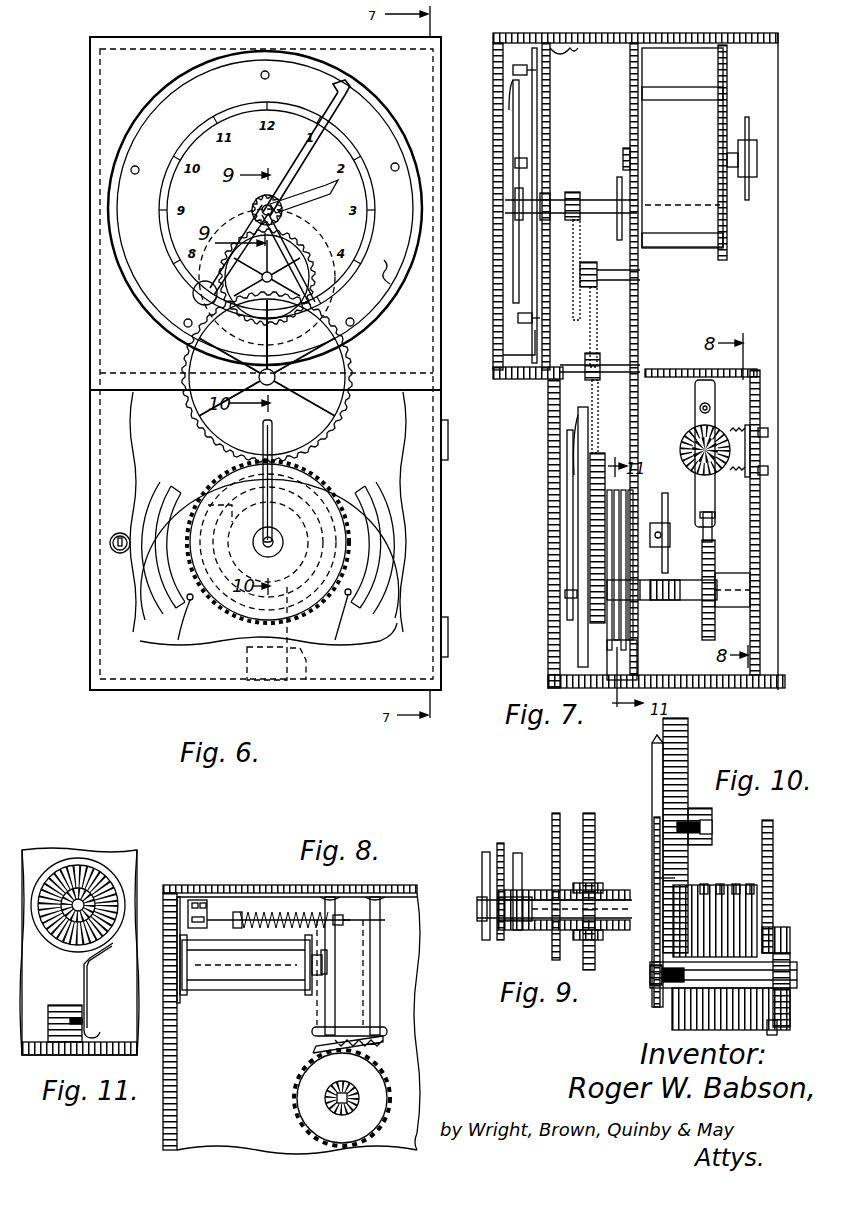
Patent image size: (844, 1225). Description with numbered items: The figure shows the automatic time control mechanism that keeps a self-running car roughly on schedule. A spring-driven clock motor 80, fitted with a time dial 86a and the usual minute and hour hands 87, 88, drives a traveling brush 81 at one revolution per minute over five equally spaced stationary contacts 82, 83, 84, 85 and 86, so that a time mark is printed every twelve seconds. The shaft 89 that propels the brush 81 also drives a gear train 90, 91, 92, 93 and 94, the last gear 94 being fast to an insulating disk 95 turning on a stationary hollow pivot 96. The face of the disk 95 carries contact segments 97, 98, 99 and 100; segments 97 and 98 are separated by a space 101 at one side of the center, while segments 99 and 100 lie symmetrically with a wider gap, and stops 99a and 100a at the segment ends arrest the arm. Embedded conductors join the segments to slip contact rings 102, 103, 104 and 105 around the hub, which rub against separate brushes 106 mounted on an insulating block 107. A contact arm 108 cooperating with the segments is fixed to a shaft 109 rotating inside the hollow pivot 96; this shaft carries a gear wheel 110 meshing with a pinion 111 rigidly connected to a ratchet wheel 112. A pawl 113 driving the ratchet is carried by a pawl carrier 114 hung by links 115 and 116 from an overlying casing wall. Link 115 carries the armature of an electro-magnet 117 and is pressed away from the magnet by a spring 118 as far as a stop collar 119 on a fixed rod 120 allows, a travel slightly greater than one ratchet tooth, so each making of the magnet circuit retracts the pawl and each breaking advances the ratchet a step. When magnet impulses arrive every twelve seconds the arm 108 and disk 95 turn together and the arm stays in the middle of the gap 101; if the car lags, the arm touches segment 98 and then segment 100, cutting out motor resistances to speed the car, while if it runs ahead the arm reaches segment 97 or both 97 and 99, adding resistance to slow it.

In FIG. 7, the clock motor 80 is at (708, 130).
In FIG. 6, the traveling brush 81 is at (332, 94).
In FIG. 7, the traveling brush 81 is at (520, 135).
In FIG. 9, the traveling brush 81 is at (482, 876).
In FIG. 6, the stationary contact 82 is at (261, 77).
In FIG. 7, the stationary contact 82 is at (513, 70).
In FIG. 6, the stationary contact 83 is at (394, 172).
In FIG. 6, the stationary contact 84 is at (353, 326).
In FIG. 6, the stationary contact 85 is at (186, 327).
In FIG. 7, the stationary contact 85 is at (518, 322).
In FIG. 6, the stationary contact 86 is at (139, 167).
In FIG. 6, the time dial 86a is at (390, 284).
In FIG. 7, the time dial 86a is at (552, 110).
In FIG. 9, the time dial 86a is at (558, 813).
In FIG. 6, the minute hand 87 is at (295, 254).
In FIG. 7, the minute hand 87 is at (513, 265).
In FIG. 9, the minute hand 87 is at (500, 843).
In FIG. 6, the hour hand 88 is at (304, 190).
In FIG. 7, the hour hand 88 is at (515, 186).
In FIG. 9, the hour hand 88 is at (518, 853).
In FIG. 7, the shaft 89 is at (598, 190).
In FIG. 9, the shaft 89 is at (612, 900).
In FIG. 7, the gear 90 is at (570, 192).
In FIG. 7, the gear 91 is at (592, 262).
In FIG. 7, the gear 92 is at (580, 330).
In FIG. 7, the gear 93 is at (597, 313).
In FIG. 7, the gear 94 is at (604, 453).
In FIG. 10, the gear 94 is at (696, 808).
In FIG. 6, the disk 95 is at (370, 503).
In FIG. 7, the disk 95 is at (567, 618).
In FIG. 10, the disk 95 is at (688, 745).
In FIG. 11, the disk 95 is at (113, 882).
In FIG. 10, the hollow pivot 96 is at (672, 1010).
In FIG. 6, the contact segment 97 is at (176, 492).
In FIG. 10, the contact segment 97 is at (654, 798).
In FIG. 6, the contact segment 98 is at (330, 470).
In FIG. 6, the contact segment 99 is at (250, 536).
In FIG. 10, the contact segment 99 is at (650, 879).
In FIG. 6, the stop 99a is at (178, 640).
In FIG. 7, the stop 99a is at (565, 592).
In FIG. 6, the contact segment 100 is at (345, 550).
In FIG. 6, the stop 100a is at (344, 622).
In FIG. 6, the space 101 is at (318, 410).
In FIG. 6, the slip contact ring 102 is at (230, 504).
In FIG. 10, the slip contact ring 102 is at (700, 885).
In FIG. 10, the slip contact ring 103 is at (720, 884).
In FIG. 11, the slip contact ring 103 is at (80, 858).
In FIG. 10, the slip contact ring 104 is at (736, 870).
In FIG. 10, the slip contact ring 105 is at (744, 884).
In FIG. 6, the brush 106 is at (306, 658).
In FIG. 7, the brush 106 is at (612, 592).
In FIG. 11, the brush 106 is at (88, 975).
In FIG. 6, the insulating block 107 is at (247, 670).
In FIG. 7, the insulating block 107 is at (637, 660).
In FIG. 11, the insulating block 107 is at (52, 1005).
In FIG. 6, the contact arm 108 is at (274, 495).
In FIG. 7, the contact arm 108 is at (578, 460).
In FIG. 10, the contact arm 108 is at (652, 778).
In FIG. 10, the shaft 109 is at (654, 962).
In FIG. 7, the gear wheel 110 is at (664, 493).
In FIG. 7, the pinion 111 is at (670, 580).
In FIG. 7, the ratchet wheel 112 is at (712, 572).
In FIG. 8, the ratchet wheel 112 is at (292, 1104).
In FIG. 7, the pawl 113 is at (712, 525).
In FIG. 8, the pawl 113 is at (316, 1048).
In FIG. 8, the pawl carrier 114 is at (340, 1027).
In FIG. 8, the link 115 is at (327, 1000).
In FIG. 7, the link 116 is at (715, 500).
In FIG. 8, the link 116 is at (380, 970).
In FIG. 7, the electro-magnet 117 is at (688, 438).
In FIG. 8, the electro-magnet 117 is at (230, 970).
In FIG. 8, the spring 118 is at (255, 918).
In FIG. 8, the stop collar 119 is at (336, 935).
In FIG. 8, the fixed rod 120 is at (385, 921).